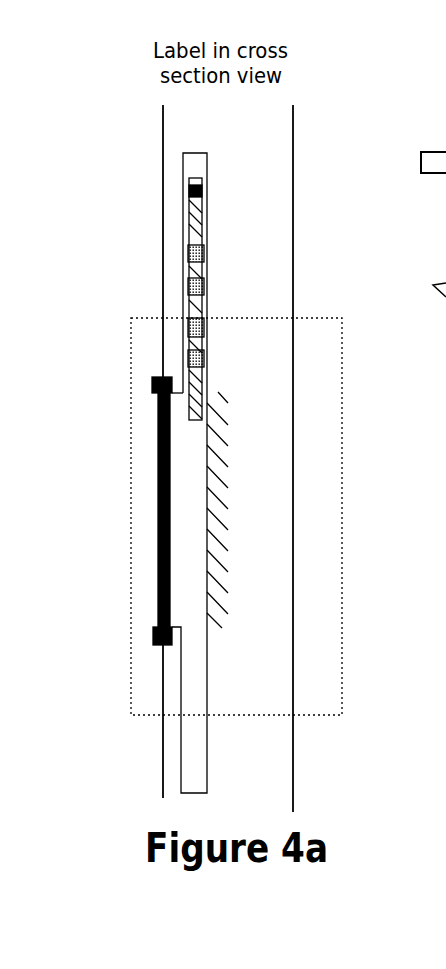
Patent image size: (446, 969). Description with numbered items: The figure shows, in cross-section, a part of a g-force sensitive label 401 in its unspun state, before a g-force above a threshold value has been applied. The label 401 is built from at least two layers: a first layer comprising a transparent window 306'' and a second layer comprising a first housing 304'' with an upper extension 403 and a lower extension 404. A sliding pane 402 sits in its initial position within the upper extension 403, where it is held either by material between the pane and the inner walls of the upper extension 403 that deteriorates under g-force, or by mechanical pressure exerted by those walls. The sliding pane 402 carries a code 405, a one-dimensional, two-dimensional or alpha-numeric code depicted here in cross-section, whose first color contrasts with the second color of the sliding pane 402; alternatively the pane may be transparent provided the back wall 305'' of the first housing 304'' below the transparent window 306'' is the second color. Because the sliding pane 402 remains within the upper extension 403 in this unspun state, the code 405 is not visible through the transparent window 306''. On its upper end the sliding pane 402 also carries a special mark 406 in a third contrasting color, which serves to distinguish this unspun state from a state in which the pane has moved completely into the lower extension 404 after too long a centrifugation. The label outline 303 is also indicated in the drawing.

The g-force sensitive label 401 is at (252, 153).
The sliding pane 402 is at (192, 208).
The upper extension 403 is at (202, 168).
The lower extension 404 is at (193, 759).
The code 405 is at (189, 252).
The special mark 406 is at (203, 195).
The label outline 303 is at (342, 538).
The first housing 304'' is at (119, 510).
The back wall 305'' is at (324, 504).
The transparent window 306'' is at (109, 511).